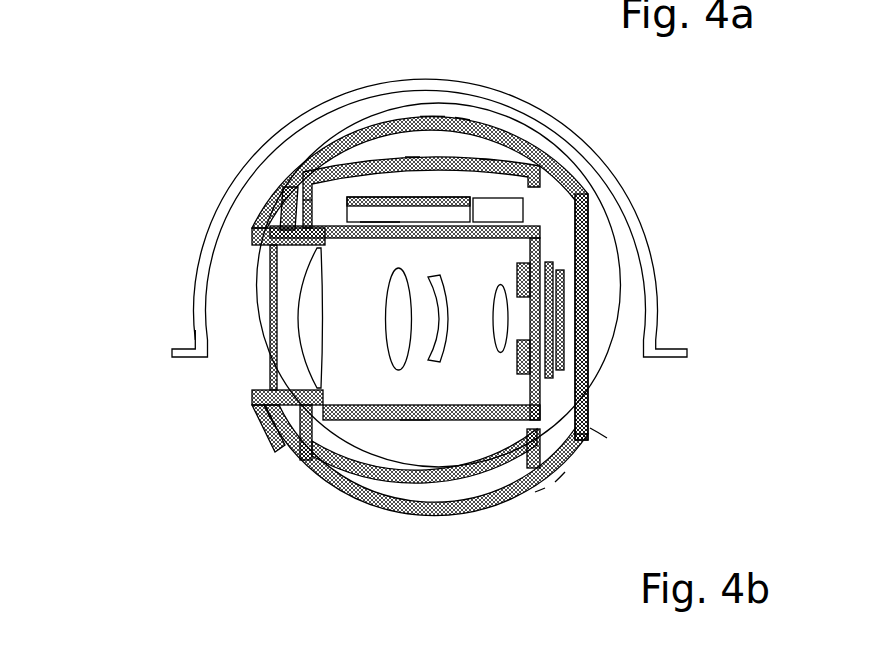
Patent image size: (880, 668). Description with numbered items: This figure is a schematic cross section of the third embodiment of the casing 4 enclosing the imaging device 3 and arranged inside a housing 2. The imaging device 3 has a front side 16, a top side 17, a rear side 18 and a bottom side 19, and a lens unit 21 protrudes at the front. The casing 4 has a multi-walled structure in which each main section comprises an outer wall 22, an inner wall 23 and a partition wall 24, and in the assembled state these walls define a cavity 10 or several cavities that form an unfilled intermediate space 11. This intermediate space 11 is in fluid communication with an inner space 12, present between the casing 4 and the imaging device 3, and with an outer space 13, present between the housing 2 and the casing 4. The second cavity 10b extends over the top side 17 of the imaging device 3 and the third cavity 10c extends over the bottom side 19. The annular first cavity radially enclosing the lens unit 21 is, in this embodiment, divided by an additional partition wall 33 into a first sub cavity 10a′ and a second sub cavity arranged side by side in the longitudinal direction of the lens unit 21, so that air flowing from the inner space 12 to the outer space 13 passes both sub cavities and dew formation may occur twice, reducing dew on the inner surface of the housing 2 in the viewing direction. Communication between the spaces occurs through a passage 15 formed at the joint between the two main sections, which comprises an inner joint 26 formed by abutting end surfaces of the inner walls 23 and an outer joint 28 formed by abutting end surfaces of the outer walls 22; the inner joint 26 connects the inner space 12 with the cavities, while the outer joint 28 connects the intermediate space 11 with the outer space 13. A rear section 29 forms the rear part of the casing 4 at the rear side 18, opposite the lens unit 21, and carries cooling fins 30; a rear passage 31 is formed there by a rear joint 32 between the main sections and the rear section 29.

The housing 2 is at (627, 203).
The imaging device 3 is at (468, 355).
The casing 4 is at (607, 438).
The cavity 10 is at (327, 460).
The first sub cavity 10a′ is at (297, 423).
The second cavity 10b is at (343, 167).
The third cavity 10c is at (485, 490).
The intermediate space 11 is at (395, 158).
The inner space 12 is at (440, 193).
The outer space 13 is at (245, 297).
The passage 15 is at (518, 152).
The front side 16 is at (233, 368).
The top side 17 is at (378, 190).
The rear side 18 is at (567, 307).
The bottom side 19 is at (414, 437).
The lens unit 21 is at (260, 403).
The outer wall 22 is at (487, 168).
The inner wall 23 is at (432, 150).
The partition wall 24 is at (303, 207).
The inner joint 26 is at (413, 150).
The outer joint 28 is at (460, 120).
The rear section 29 is at (577, 183).
The cooling fins 30 is at (603, 273).
The rear passage 31 is at (553, 487).
The rear joint 32 is at (540, 480).
The additional partition wall 33 is at (268, 213).